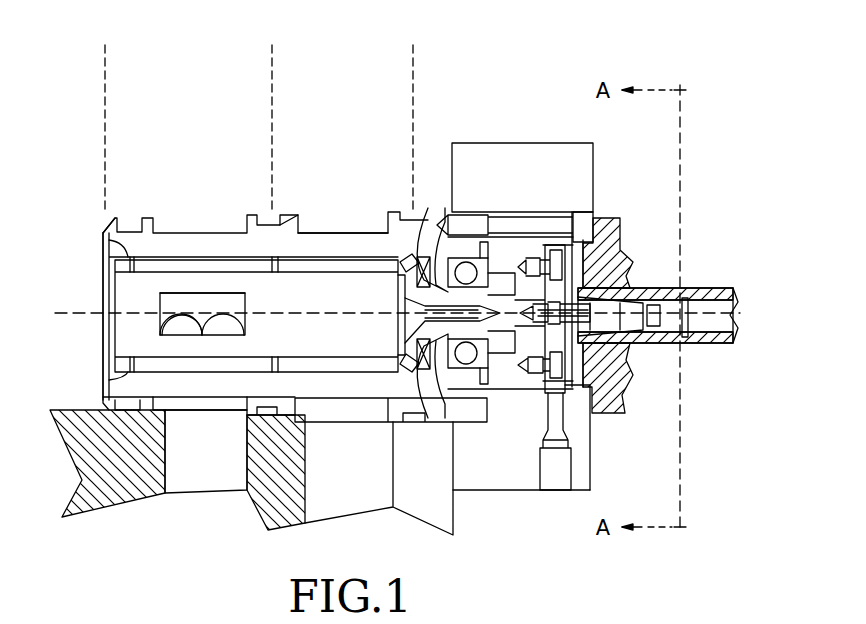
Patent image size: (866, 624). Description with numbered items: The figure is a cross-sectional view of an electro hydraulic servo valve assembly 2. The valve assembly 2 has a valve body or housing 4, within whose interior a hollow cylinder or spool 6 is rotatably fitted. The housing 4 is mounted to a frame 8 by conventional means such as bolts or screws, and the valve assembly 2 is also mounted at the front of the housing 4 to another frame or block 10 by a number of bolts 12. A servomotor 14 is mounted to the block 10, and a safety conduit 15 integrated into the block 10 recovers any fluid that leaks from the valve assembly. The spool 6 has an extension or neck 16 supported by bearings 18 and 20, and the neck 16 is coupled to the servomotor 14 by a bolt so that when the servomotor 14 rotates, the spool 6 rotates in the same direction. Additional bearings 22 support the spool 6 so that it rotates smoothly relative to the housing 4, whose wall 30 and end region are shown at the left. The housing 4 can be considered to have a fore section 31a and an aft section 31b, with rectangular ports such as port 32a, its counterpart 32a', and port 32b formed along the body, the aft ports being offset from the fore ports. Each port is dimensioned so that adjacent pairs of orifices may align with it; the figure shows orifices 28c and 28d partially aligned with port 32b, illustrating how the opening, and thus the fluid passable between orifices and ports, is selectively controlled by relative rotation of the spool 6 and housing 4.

The valve assembly 2 is at (257, 158).
The housing 4 is at (178, 233).
The hollow cylinder 6 is at (340, 347).
The frame 8 is at (120, 505).
The block 10 is at (515, 143).
The bolts 12 is at (588, 218).
The servomotor 14 is at (624, 392).
The safety conduit 15 is at (553, 490).
The neck 16 is at (525, 340).
The bearing 18 is at (377, 212).
The bearing 20 is at (430, 210).
The bearings 22 is at (106, 244).
The orifice 28c is at (238, 318).
The orifice 28d is at (168, 320).
The end wall 30 is at (102, 305).
The fore section 31a is at (272, 67).
The aft section 31b is at (105, 67).
The port 32a is at (301, 474).
The support surface 32a' is at (343, 211).
The port 32b is at (212, 293).